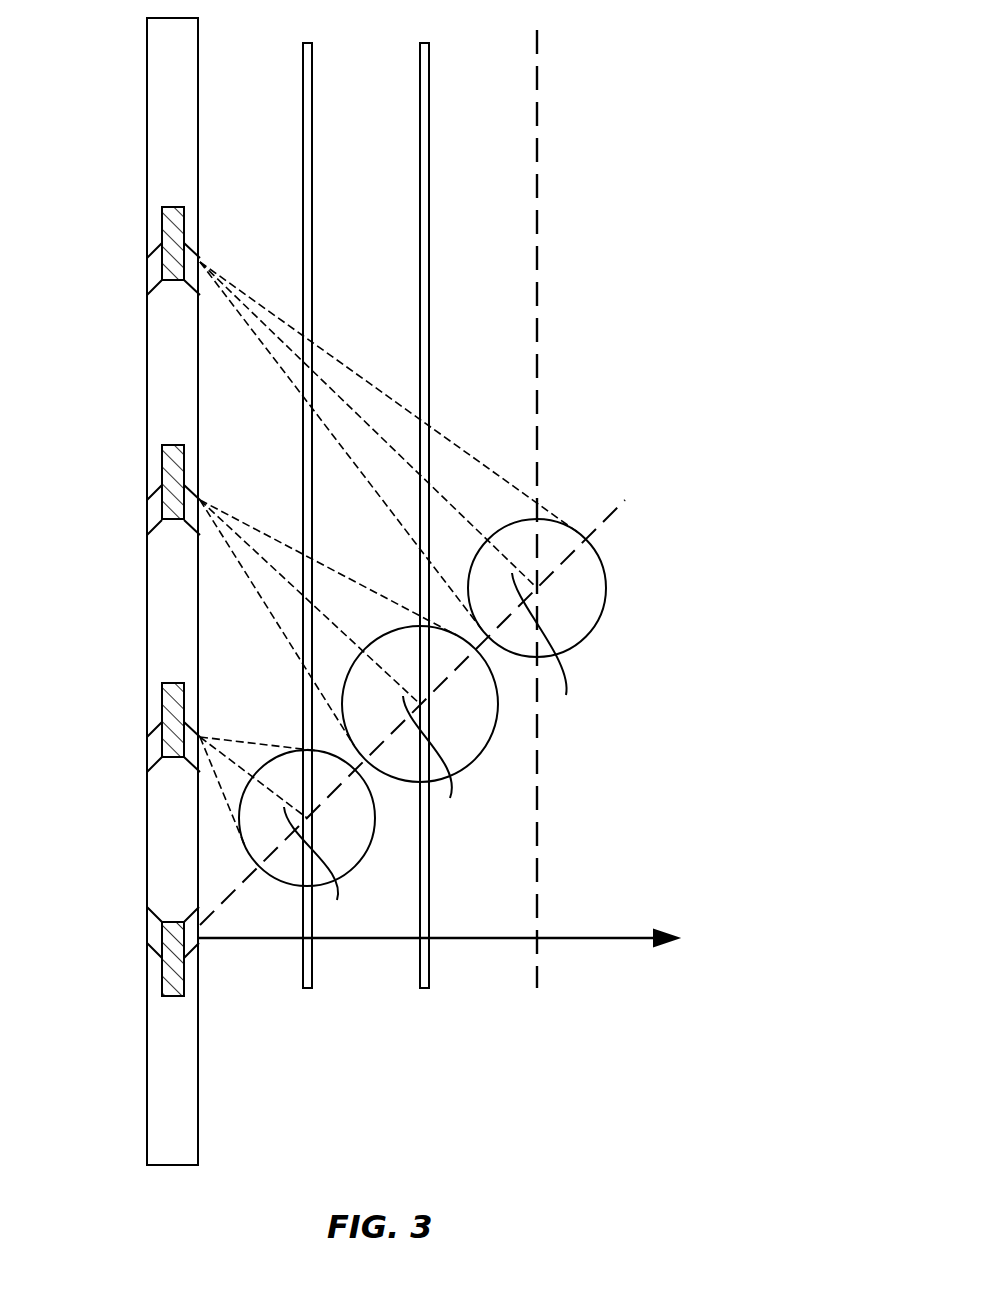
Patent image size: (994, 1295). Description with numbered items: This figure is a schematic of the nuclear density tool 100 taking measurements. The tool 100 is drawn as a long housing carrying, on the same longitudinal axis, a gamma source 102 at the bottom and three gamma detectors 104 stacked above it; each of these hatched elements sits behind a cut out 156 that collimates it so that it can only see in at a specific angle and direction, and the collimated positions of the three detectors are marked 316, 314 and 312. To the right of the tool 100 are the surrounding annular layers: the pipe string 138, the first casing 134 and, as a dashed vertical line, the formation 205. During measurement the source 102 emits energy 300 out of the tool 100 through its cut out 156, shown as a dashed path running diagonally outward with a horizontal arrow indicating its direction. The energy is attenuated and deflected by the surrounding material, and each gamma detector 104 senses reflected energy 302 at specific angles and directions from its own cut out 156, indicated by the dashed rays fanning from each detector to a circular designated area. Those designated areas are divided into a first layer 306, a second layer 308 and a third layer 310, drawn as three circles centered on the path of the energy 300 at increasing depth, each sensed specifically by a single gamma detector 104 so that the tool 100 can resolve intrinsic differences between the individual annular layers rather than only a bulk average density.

The nuclear density tool 100 is at (147, 88).
The gamma source 102 is at (162, 983).
The gamma detector 104 is at (162, 222).
The cut out 156 is at (147, 278).
The first emitter position 316 is at (172, 281).
The second emitter position 314 is at (172, 519).
The third emitter position 312 is at (172, 757).
The pipe string 138 is at (310, 43).
The first casing 134 is at (427, 43).
The formation 205 is at (538, 40).
The energy 300 is at (225, 898).
The reflected energy 302 is at (434, 750).
The first layer 306 is at (363, 842).
The second layer 308 is at (475, 747).
The third layer 310 is at (573, 628).